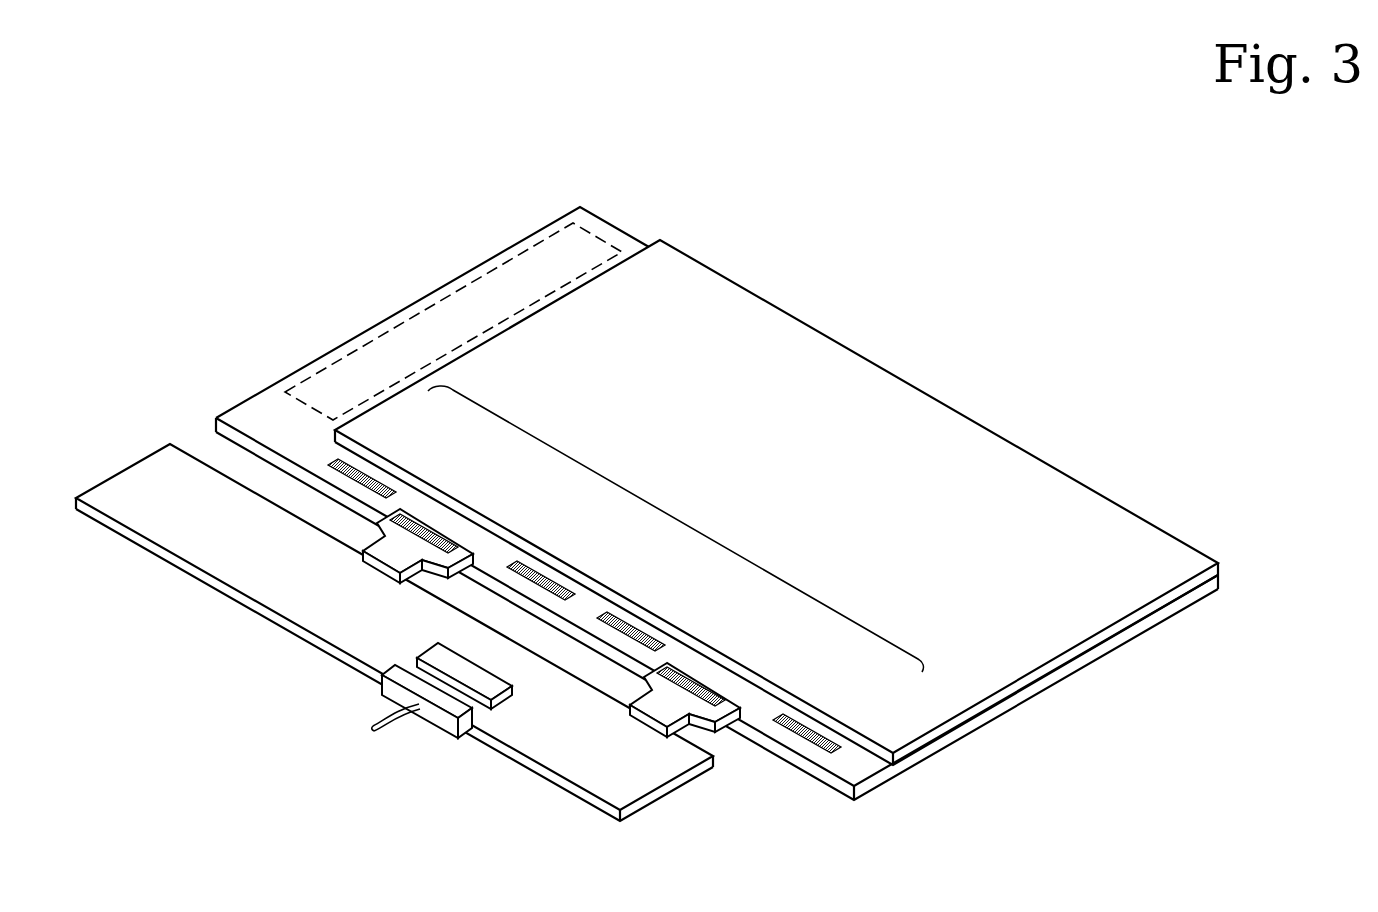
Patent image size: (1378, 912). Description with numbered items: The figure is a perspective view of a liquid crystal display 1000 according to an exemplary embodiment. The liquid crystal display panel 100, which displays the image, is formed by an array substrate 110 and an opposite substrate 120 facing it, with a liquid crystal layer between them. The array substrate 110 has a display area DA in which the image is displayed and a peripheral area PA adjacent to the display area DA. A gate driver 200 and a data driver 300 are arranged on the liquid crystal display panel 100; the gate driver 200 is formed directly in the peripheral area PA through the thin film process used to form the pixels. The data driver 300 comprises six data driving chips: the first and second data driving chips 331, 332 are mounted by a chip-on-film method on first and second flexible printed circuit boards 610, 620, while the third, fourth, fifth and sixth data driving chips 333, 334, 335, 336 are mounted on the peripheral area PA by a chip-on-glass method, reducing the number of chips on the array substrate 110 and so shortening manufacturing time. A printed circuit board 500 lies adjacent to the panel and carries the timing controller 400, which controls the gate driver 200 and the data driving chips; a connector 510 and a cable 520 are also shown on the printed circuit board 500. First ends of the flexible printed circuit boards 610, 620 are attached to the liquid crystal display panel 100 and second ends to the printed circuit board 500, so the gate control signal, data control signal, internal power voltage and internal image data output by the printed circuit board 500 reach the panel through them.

The liquid crystal display 1000 is at (1028, 213).
The liquid crystal display panel 100 is at (597, 150).
The array substrate 110 is at (602, 215).
The opposite substrate 120 is at (637, 253).
The gate driver 200 is at (447, 297).
The data driver 300 is at (692, 528).
The first data driving chip 331 is at (432, 527).
The second data driving chip 332 is at (697, 680).
The third data driving chip 333 is at (372, 483).
The fourth data driving chip 334 is at (550, 584).
The fifth data driving chip 335 is at (643, 633).
The sixth data driving chip 336 is at (820, 737).
The timing controller 400 is at (507, 697).
The printed circuit board 500 is at (570, 790).
The connector 510 is at (448, 727).
The cable 520 is at (393, 731).
The first flexible printed circuit board 610 is at (393, 557).
The second flexible printed circuit board 620 is at (665, 710).
The peripheral area PA is at (278, 418).
The display area DA is at (800, 342).